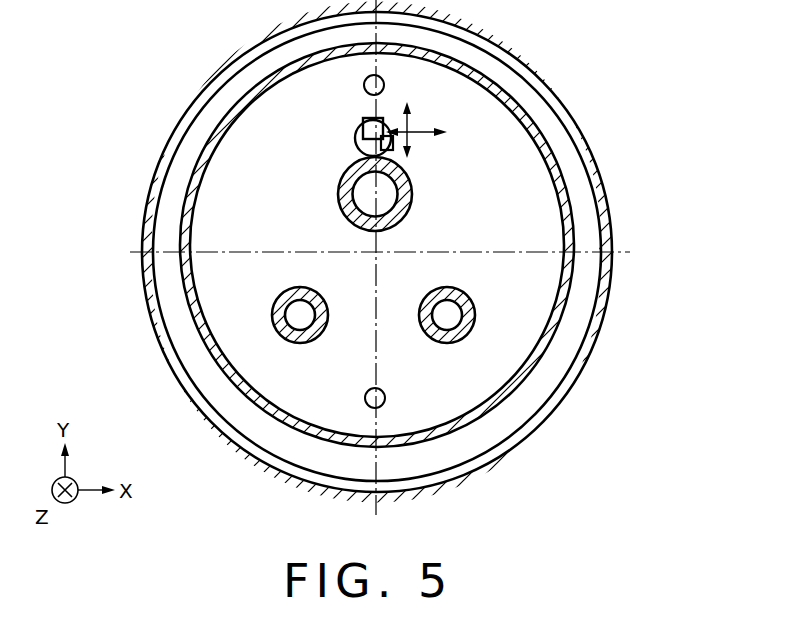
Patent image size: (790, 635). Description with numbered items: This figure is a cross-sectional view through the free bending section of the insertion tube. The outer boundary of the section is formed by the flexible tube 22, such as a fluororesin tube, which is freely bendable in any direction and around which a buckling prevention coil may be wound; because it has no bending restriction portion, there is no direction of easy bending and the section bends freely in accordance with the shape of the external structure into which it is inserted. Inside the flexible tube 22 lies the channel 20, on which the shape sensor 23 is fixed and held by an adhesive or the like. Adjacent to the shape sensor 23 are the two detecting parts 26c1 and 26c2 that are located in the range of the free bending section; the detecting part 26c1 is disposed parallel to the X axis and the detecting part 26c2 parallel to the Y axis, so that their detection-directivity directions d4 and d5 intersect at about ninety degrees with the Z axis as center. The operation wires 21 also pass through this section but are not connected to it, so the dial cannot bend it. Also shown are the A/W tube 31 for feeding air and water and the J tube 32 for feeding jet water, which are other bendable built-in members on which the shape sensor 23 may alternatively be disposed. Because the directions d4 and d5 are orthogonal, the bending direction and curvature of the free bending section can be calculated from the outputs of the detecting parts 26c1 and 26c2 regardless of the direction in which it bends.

The channel 20 is at (338, 201).
The operation wires 21 is at (385, 85).
The flexible tube 22 is at (186, 200).
The shape sensor 23 is at (357, 142).
The detecting part 26c1 is at (363, 123).
The detecting part 26c2 is at (394, 150).
The A/W tube 31 is at (275, 300).
The J tube 32 is at (472, 300).
The detection-directivity direction d4 is at (416, 146).
The detection-directivity direction d5 is at (413, 118).